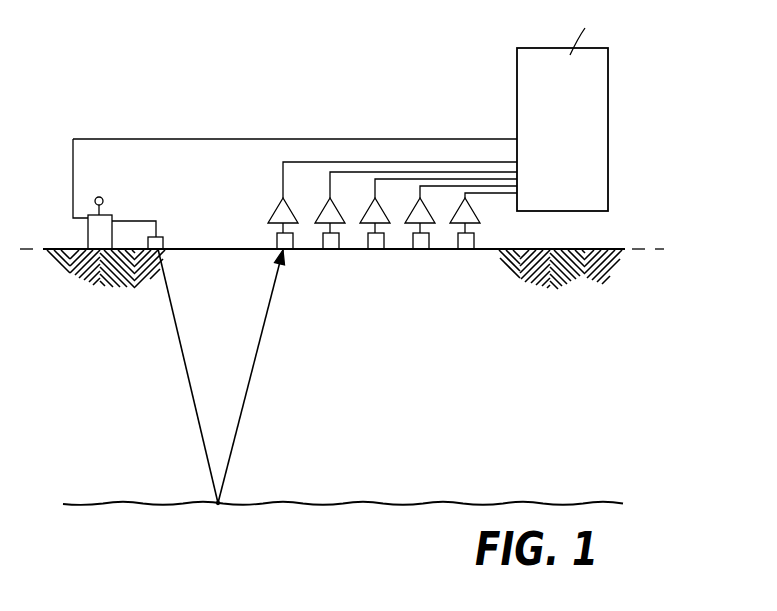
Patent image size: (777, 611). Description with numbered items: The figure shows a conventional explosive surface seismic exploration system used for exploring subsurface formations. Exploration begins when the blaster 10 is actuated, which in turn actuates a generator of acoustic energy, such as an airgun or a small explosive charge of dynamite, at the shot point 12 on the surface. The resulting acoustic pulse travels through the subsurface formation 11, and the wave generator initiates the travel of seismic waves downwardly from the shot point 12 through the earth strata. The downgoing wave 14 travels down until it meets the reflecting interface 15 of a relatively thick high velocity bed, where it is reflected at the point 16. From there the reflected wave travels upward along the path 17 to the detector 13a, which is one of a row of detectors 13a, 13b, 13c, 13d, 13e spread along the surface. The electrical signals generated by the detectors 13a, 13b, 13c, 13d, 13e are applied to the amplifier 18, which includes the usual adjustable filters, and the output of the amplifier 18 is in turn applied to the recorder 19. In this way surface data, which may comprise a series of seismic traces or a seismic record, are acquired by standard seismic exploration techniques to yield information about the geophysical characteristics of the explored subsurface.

The blaster 10 is at (88, 232).
The subsurface formation 11 is at (112, 355).
The shot point 12 is at (161, 240).
The detector 13a is at (297, 250).
The detector 13b is at (331, 237).
The detector 13c is at (380, 240).
The detector 13d is at (423, 240).
The detector 13e is at (468, 240).
The downgoing wave 14 is at (196, 416).
The reflecting interface 15 is at (118, 500).
The reflection point 16 is at (222, 500).
The reflected wave path 17 is at (256, 348).
The amplifier 18 is at (276, 214).
The recorder 19 is at (603, 125).